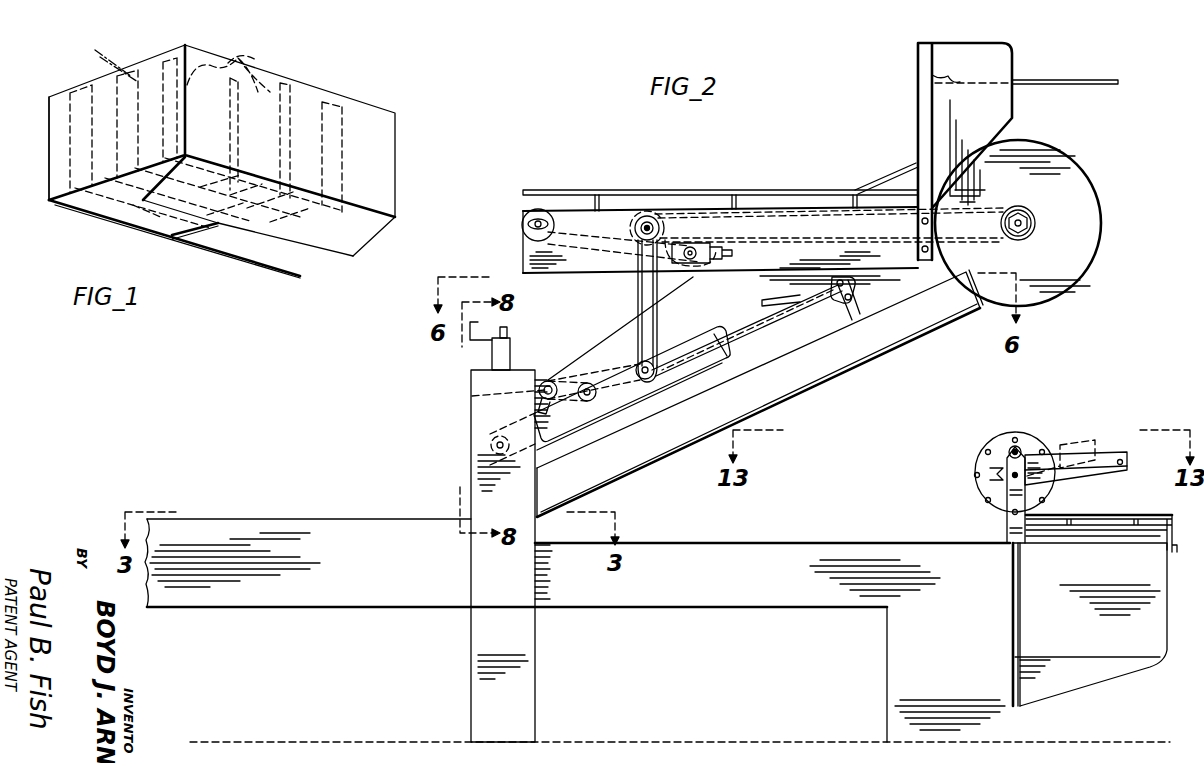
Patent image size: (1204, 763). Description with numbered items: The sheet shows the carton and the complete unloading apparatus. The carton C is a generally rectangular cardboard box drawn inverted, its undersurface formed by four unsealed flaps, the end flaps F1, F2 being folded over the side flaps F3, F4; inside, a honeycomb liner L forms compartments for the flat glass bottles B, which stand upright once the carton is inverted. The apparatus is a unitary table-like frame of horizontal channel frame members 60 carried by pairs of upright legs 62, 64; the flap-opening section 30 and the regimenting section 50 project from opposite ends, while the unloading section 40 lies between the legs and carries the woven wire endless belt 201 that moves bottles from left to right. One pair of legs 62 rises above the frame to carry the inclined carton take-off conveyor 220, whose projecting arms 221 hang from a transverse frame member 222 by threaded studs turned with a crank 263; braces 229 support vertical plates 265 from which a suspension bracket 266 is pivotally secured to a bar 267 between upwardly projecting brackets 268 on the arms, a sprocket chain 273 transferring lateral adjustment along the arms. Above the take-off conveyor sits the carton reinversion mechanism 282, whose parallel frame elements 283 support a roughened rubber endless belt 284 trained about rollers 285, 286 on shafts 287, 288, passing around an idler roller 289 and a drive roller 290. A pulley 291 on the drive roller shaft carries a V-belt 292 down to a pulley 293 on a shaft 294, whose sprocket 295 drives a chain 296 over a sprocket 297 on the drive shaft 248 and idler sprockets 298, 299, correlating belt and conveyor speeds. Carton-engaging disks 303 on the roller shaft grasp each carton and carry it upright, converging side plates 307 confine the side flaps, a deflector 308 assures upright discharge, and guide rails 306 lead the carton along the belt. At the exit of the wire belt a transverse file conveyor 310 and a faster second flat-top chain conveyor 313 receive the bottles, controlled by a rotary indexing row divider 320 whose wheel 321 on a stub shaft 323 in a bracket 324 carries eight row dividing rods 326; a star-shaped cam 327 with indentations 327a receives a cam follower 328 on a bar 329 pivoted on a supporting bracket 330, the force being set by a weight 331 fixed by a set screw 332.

In FIG. 1, the carton C is at (388, 115).
In FIG. 1, the honeycomb liner L is at (111, 61).
In FIG. 1, the bottles B is at (257, 68).
In FIG. 1, the end flap F1 is at (145, 222).
In FIG. 1, the end flap F2 is at (273, 245).
In FIG. 1, the side flap F3 is at (241, 263).
In FIG. 1, the side flap F4 is at (385, 237).
In FIG. 2, the flap-opening section 30 is at (212, 494).
In FIG. 2, the unloading section 40 is at (750, 503).
In FIG. 2, the regimenting section 50 is at (1133, 499).
In FIG. 2, the frame members 60 is at (370, 608).
In FIG. 2, the upright legs 62 is at (527, 689).
In FIG. 2, the upright legs 64 is at (896, 693).
In FIG. 2, the woven wire endless belt 201 is at (786, 535).
In FIG. 2, the carton take-off conveyor 220 is at (878, 369).
In FIG. 2, the projecting arms 221 is at (792, 395).
In FIG. 2, the transverse frame member 222 is at (468, 376).
In FIG. 2, the braces 229 is at (700, 372).
In FIG. 2, the drive shaft 248 is at (490, 446).
In FIG. 2, the crank 263 is at (470, 342).
In FIG. 2, the vertical plates 265 is at (699, 300).
In FIG. 2, the suspension bracket 266 is at (785, 301).
In FIG. 2, the bar 267 is at (856, 291).
In FIG. 2, the brackets 268 is at (860, 308).
In FIG. 2, the sprocket chain 273 is at (768, 326).
In FIG. 2, the carton reinversion mechanism 282 is at (1077, 143).
In FIG. 2, the frame elements 283 is at (830, 253).
In FIG. 2, the endless conveyor belt 284 is at (995, 206).
In FIG. 2, the roller 285 is at (548, 238).
In FIG. 2, the roller 286 is at (1000, 235).
In FIG. 2, the shaft 287 is at (525, 230).
In FIG. 2, the roller shaft 288 is at (1033, 221).
In FIG. 2, the idler roller 289 is at (700, 246).
In FIG. 2, the drive roller 290 is at (645, 236).
In FIG. 2, the pulley 291 is at (660, 229).
In FIG. 2, the V-belt 292 is at (637, 307).
In FIG. 2, the pulley 293 is at (656, 364).
In FIG. 2, the shaft 294 is at (650, 382).
In FIG. 2, the sprocket 295 is at (633, 358).
In FIG. 2, the drive chain 296 is at (584, 382).
In FIG. 2, the sprocket 297 is at (528, 420).
In FIG. 2, the idler sprocket 298 is at (470, 397).
In FIG. 2, the idler sprocket 299 is at (570, 380).
In FIG. 2, the carton-engaging disk 303 is at (1078, 270).
In FIG. 2, the carton guide rails 306 is at (790, 190).
In FIG. 2, the side plates 307 is at (1010, 113).
In FIG. 2, the deflector 308 is at (1060, 80).
In FIG. 2, the file conveyor 310 is at (1048, 543).
In FIG. 2, the second flat-top chain conveyor 313 is at (1114, 543).
In FIG. 2, the rotary indexing row divider 320 is at (1032, 412).
In FIG. 2, the wheel 321 is at (975, 455).
In FIG. 2, the stub shaft 323 is at (1008, 480).
In FIG. 2, the bracket 324 is at (1005, 527).
In FIG. 2, the row dividing rods 326 is at (984, 440).
In FIG. 2, the star-shaped cam 327 is at (992, 466).
In FIG. 2, the indentations 327a is at (996, 479).
In FIG. 2, the cam follower 328 is at (1012, 446).
In FIG. 2, the bar 329 is at (1045, 452).
In FIG. 2, the supporting bracket 330 is at (1065, 475).
In FIG. 2, the weight 331 is at (1085, 446).
In FIG. 2, the set screw 332 is at (1100, 430).